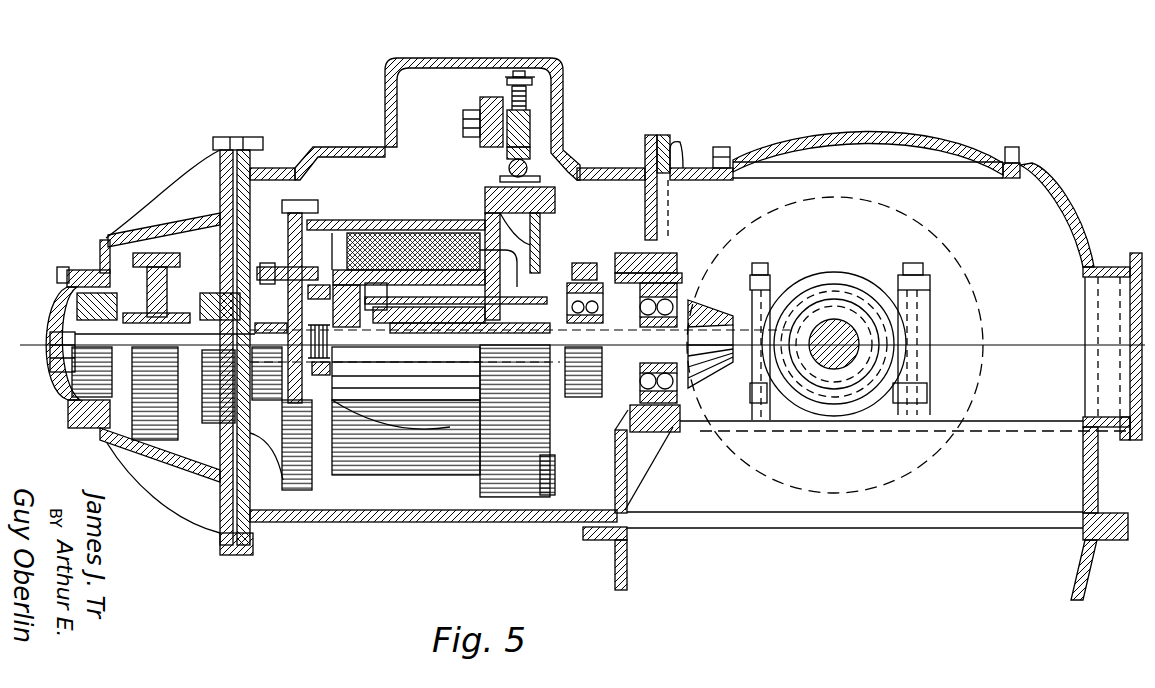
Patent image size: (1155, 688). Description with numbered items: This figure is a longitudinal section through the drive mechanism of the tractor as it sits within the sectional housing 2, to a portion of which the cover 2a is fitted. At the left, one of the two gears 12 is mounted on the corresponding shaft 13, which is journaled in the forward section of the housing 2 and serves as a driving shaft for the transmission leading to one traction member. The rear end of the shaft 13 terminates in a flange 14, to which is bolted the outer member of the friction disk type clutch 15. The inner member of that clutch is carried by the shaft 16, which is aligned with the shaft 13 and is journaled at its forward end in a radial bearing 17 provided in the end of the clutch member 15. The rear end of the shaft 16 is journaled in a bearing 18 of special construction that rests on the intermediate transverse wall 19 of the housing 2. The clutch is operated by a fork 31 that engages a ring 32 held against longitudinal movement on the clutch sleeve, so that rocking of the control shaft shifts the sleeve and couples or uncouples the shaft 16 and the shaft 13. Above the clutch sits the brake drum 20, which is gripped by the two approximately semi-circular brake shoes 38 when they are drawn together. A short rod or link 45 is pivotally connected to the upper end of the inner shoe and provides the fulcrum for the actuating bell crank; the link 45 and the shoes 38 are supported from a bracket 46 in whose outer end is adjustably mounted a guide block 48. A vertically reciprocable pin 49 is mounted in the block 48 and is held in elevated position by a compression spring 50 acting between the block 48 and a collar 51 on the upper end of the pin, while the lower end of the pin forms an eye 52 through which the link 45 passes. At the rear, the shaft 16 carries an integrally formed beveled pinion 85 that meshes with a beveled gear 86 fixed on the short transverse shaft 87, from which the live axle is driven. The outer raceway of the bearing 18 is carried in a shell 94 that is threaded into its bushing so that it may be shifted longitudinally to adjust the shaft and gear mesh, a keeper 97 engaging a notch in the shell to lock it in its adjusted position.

The sectional housing 2 is at (613, 165).
The cover 2a is at (386, 74).
The gears 12 is at (143, 250).
The shafts 13 is at (97, 337).
The flange 14 is at (282, 428).
The clutch 15 is at (383, 220).
The shaft 16 is at (413, 362).
The radial bearing 17 is at (318, 286).
The bearing 18 is at (677, 273).
The intermediate transverse wall 19 is at (633, 467).
The brake drum 20 is at (558, 237).
The fork 31 is at (582, 263).
The ring 32 is at (588, 397).
The brake shoes 38 is at (555, 202).
The rod or link 45 is at (500, 170).
The bracket 46 is at (495, 98).
The guide block 48 is at (533, 119).
The pin 49 is at (528, 101).
The compression spring 50 is at (532, 85).
The collar 51 is at (533, 78).
The eye 52 is at (540, 174).
The beveled pinion 85 is at (713, 307).
The beveled gear 86 is at (967, 275).
The transverse shaft 87 is at (840, 368).
The shell 94 is at (607, 287).
The keeper 97 is at (632, 253).